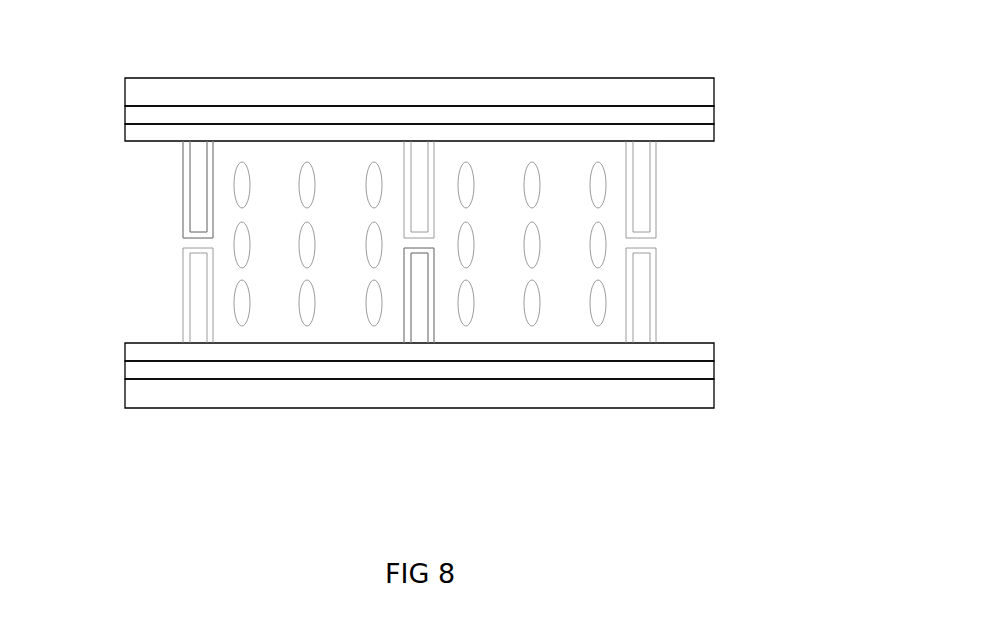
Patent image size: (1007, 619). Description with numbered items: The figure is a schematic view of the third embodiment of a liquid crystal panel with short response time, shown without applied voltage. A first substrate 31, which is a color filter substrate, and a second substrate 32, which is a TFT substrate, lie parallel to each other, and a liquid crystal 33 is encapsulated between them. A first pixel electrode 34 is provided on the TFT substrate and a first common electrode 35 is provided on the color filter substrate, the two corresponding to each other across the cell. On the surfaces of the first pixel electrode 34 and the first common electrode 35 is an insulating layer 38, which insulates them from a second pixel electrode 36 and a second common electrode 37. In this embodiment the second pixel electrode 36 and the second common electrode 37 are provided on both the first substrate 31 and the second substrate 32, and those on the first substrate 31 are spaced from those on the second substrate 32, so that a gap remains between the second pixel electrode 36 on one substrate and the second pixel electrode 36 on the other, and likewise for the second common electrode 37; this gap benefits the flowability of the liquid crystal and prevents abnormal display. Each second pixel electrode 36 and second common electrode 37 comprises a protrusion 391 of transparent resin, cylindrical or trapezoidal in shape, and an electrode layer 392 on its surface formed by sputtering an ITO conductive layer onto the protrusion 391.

The first substrate 31 is at (714, 87).
The second substrate 32 is at (714, 398).
The liquid crystal 33 is at (595, 172).
The first pixel electrode 34 is at (714, 370).
The first common electrode 35 is at (714, 114).
The second pixel electrode 36 is at (73, 162).
The second common electrode 37 is at (410, 157).
The insulating layer 38 is at (714, 136).
The protrusion 391 is at (200, 174).
The electrode layer 392 is at (185, 205).